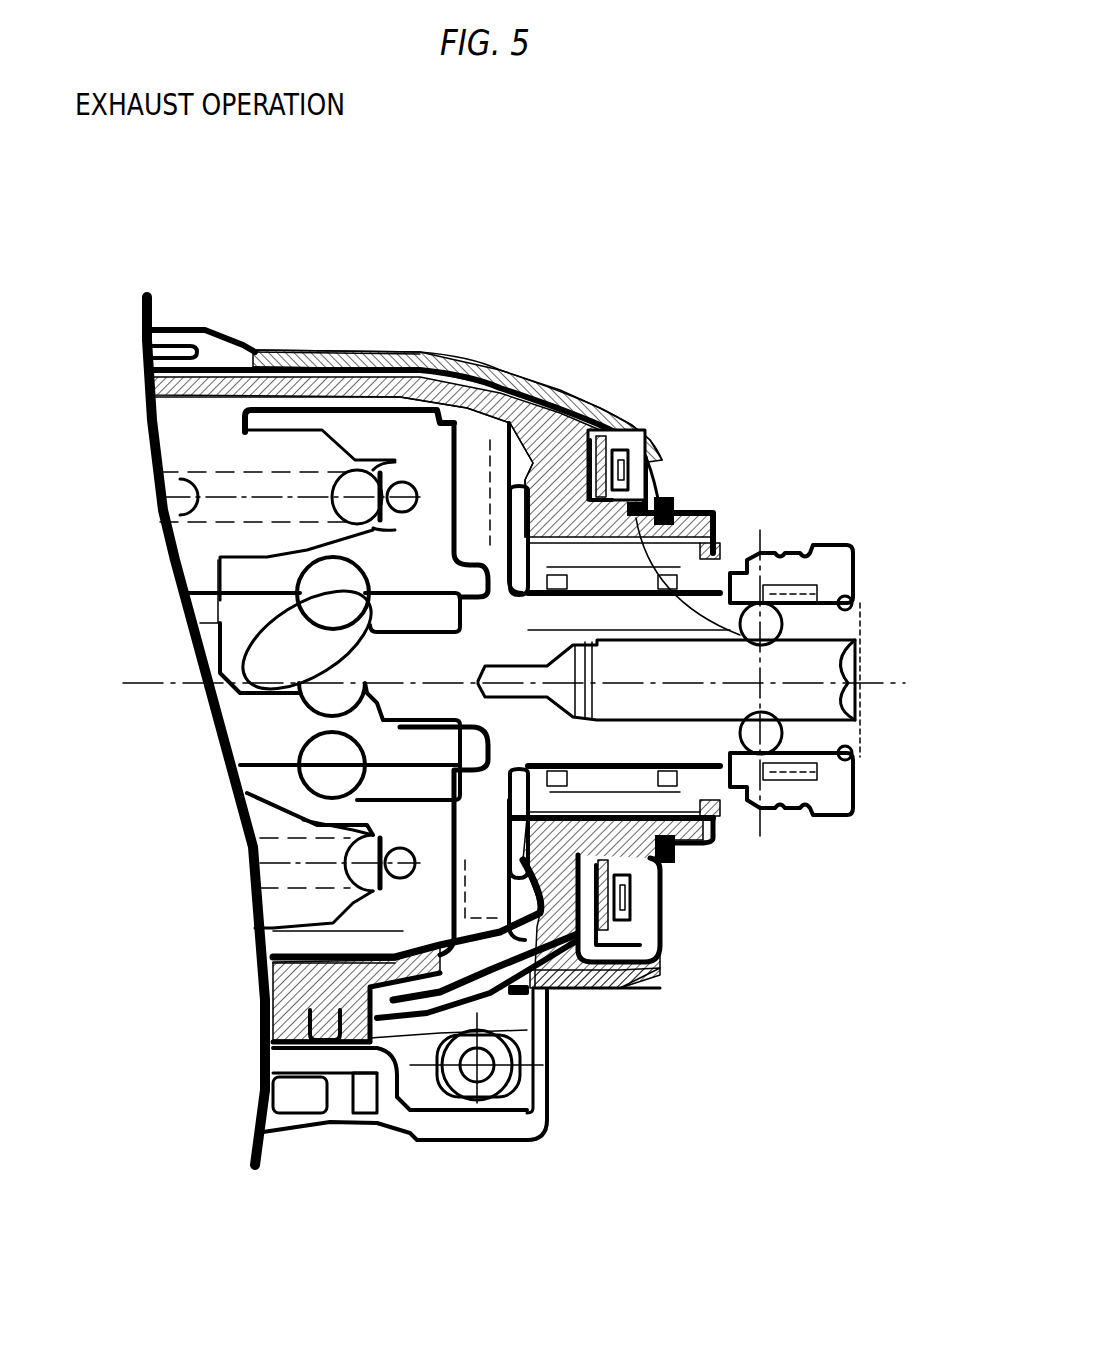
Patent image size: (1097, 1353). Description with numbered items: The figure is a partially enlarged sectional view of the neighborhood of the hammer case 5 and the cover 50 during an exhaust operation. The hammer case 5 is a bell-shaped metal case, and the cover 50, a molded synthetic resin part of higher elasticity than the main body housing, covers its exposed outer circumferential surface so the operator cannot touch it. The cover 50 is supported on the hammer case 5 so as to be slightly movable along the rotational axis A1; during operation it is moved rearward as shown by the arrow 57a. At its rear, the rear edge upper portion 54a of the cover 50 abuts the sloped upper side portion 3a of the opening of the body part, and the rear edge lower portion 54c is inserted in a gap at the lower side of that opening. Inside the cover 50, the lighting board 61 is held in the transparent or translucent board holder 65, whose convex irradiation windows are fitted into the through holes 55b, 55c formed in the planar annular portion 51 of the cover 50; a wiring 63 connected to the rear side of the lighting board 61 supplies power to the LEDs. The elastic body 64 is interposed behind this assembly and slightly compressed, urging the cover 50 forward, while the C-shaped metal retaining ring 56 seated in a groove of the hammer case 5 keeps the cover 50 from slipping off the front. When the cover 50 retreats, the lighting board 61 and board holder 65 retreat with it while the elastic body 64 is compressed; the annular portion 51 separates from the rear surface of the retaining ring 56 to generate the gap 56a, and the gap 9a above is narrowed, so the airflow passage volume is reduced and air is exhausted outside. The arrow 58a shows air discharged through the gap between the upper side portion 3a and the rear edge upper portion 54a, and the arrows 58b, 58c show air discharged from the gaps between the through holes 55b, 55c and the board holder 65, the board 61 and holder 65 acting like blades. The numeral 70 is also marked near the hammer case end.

The hammer case 5 is at (160, 383).
The upper side portion 3a is at (336, 253).
The rear edge upper portion 54a is at (270, 333).
The arrow 58a is at (247, 343).
The cover 50 is at (343, 348).
The arrow 57a is at (535, 320).
The gap 9a is at (578, 420).
The lighting board 61 is at (615, 445).
The board holder 65 is at (632, 450).
The arrow 58b is at (650, 442).
The through hole 55c is at (660, 470).
The retaining ring 56 is at (660, 508).
The gap 56a is at (692, 556).
The annular portion 51 is at (783, 630).
The rotational axis A1 is at (547, 683).
The lock nut 70 is at (876, 826).
The through hole 55b is at (653, 897).
The arrow 58c is at (670, 917).
The elastic body 64 is at (578, 990).
The rear edge lower portion 54c is at (555, 1001).
The wiring 63 is at (423, 1007).